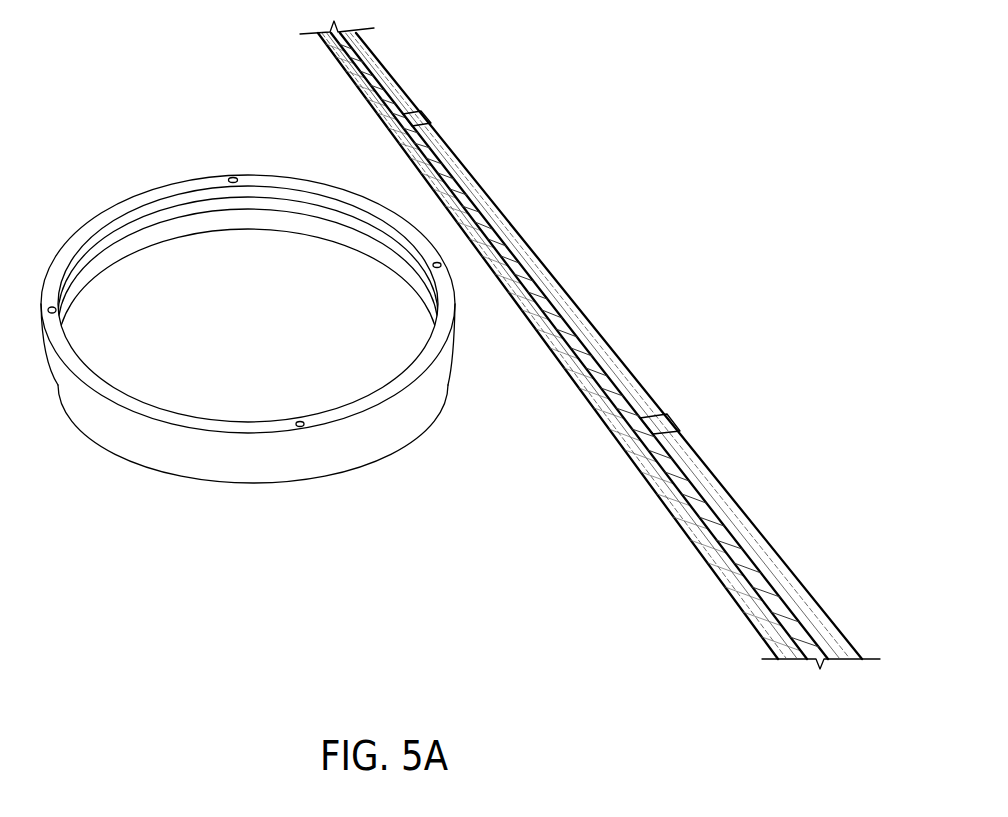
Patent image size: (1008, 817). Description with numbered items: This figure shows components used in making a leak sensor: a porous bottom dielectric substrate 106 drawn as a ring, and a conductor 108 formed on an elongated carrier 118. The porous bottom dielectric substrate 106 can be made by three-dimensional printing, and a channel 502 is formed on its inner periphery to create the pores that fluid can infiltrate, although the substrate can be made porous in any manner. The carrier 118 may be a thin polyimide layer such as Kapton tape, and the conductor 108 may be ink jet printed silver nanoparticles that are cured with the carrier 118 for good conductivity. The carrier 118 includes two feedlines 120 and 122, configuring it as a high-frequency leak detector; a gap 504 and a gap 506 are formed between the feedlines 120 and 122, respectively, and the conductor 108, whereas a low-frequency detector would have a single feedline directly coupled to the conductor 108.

The porous bottom dielectric substrate 106 is at (343, 442).
The channel 502 is at (125, 243).
The conductor 108 is at (520, 275).
The carrier 118 is at (624, 366).
The feedline 120 is at (672, 425).
The feedline 122 is at (420, 121).
The gap 504 is at (652, 432).
The gap 506 is at (417, 118).